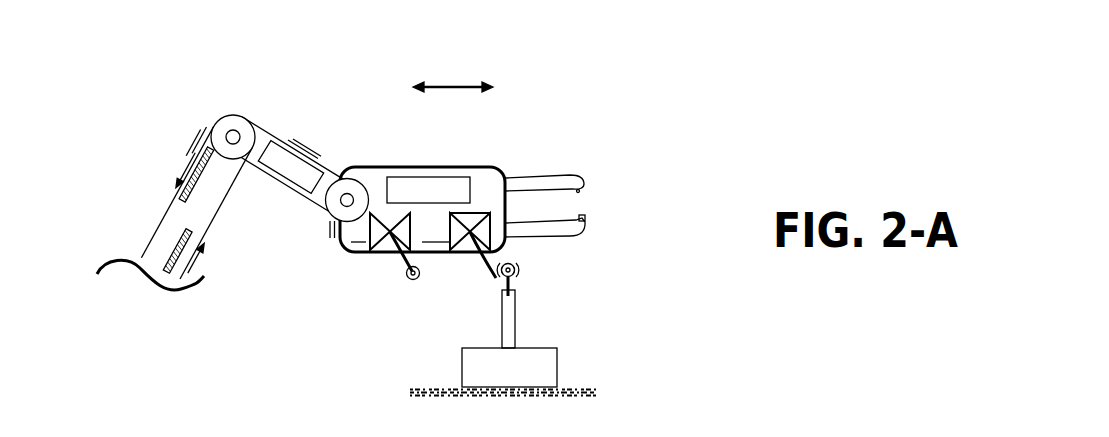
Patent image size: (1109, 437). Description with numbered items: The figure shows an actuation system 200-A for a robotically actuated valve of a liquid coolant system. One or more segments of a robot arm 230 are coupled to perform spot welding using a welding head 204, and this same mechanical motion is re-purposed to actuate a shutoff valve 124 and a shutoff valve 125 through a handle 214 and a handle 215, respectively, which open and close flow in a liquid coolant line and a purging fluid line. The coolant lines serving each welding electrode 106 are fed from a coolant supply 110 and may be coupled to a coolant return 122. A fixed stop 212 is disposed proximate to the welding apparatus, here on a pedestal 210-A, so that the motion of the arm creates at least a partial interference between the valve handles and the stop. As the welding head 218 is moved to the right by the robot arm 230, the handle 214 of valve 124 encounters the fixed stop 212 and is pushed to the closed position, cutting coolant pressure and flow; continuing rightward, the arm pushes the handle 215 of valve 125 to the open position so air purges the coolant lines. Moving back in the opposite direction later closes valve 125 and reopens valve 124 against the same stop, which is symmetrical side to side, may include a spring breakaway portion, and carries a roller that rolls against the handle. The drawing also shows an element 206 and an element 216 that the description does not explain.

The welding electrode 106 is at (589, 215).
The coolant supply 110 is at (202, 230).
The coolant return 122 is at (178, 192).
The shutoff valve 124 is at (489, 213).
The shutoff valve 125 is at (376, 213).
The actuation system 200-A is at (823, 31).
The welding head 204 is at (503, 175).
The upper gripper finger 206 is at (562, 174).
The pedestal 210-A is at (555, 348).
The fixed stop 212 is at (517, 276).
The handle 214 is at (478, 269).
The handle 215 is at (402, 262).
The link 216 is at (291, 166).
The welding head 218 is at (467, 201).
The robot arm 230 is at (227, 115).